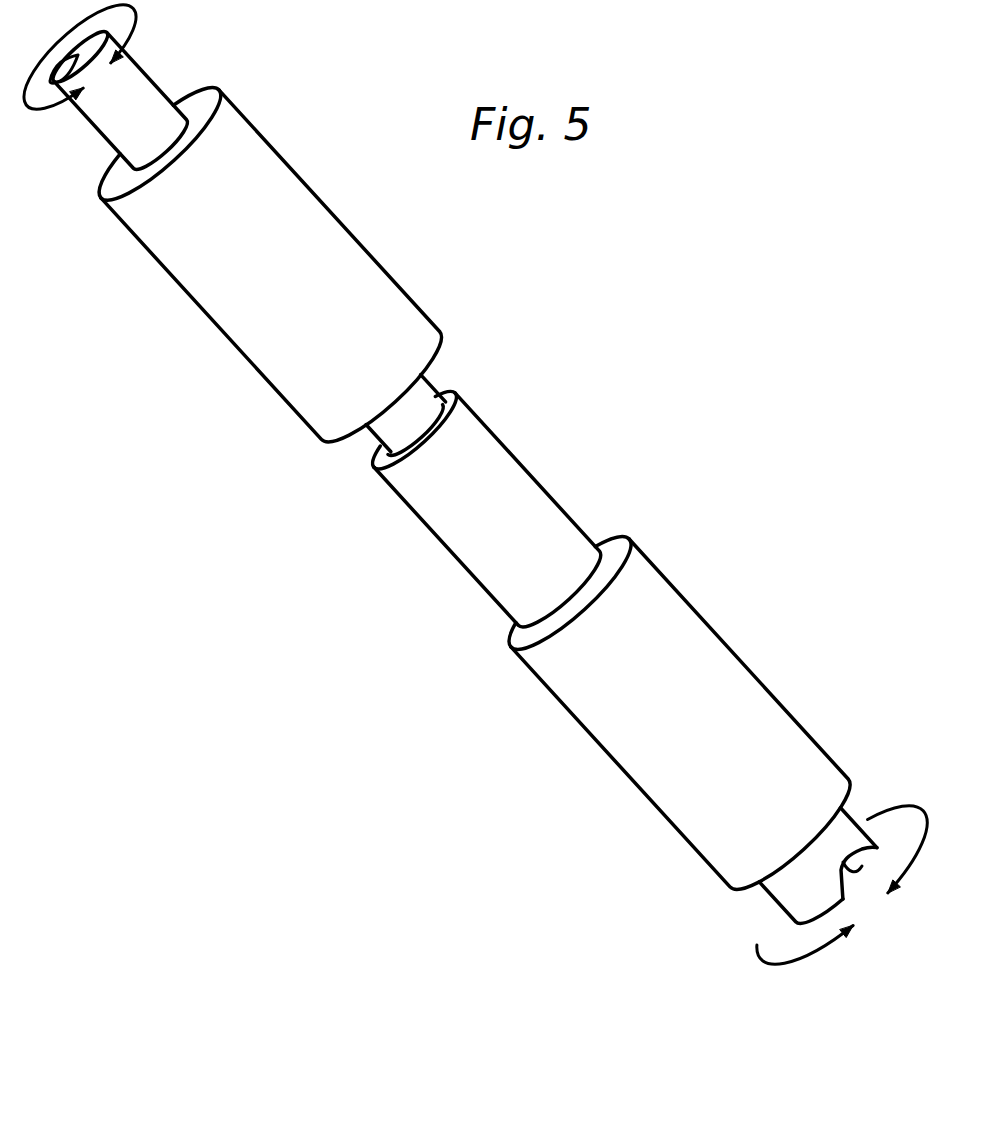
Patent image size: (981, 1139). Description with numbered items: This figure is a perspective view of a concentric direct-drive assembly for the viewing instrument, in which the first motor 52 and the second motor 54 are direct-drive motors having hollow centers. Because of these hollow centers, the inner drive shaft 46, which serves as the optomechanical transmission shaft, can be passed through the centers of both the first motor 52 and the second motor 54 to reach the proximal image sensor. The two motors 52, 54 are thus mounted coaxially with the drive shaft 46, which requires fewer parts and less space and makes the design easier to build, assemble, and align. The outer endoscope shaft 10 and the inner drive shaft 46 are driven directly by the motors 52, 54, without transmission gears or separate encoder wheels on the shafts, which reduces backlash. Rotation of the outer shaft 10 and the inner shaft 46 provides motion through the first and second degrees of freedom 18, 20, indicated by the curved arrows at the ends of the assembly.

The outer endoscope shaft 10 is at (524, 469).
The first degree of freedom 18 is at (757, 946).
The second degree of freedom 20 is at (136, 18).
The inner drive shaft 46 is at (371, 429).
The first motor 52 is at (638, 787).
The second motor 54 is at (229, 338).